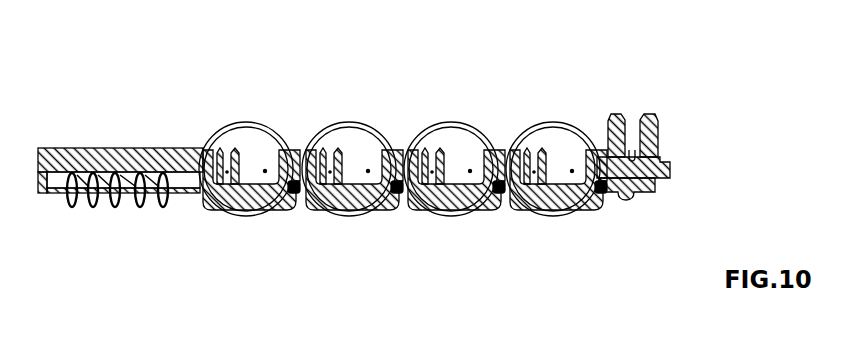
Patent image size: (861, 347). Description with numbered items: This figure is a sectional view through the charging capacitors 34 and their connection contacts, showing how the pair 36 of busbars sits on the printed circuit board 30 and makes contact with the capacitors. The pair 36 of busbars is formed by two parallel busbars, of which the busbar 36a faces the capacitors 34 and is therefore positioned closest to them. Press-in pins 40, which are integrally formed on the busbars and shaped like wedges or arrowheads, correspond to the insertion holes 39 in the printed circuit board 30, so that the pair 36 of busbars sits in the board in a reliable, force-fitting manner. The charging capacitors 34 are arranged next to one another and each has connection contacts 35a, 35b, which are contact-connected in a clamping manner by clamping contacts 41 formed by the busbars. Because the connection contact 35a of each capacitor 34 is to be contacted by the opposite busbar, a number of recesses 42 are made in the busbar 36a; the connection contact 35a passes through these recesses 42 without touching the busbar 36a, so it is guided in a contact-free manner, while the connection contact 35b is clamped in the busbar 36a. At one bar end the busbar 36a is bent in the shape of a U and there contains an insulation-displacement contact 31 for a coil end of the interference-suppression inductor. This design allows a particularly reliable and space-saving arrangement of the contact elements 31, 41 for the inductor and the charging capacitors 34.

The pair of busbars 36 is at (211, 122).
The busbar 36a is at (57, 150).
The printed circuit board 30 is at (53, 186).
The insertion holes 39 is at (170, 188).
The press-in pins 40 is at (117, 200).
The charging capacitors 34 is at (247, 140).
The connection contact 35b is at (412, 160).
The clamping contacts 41 is at (440, 137).
The recesses 42 is at (563, 178).
The connection contact 35a is at (568, 168).
The insulation-displacement contact 31 is at (633, 156).